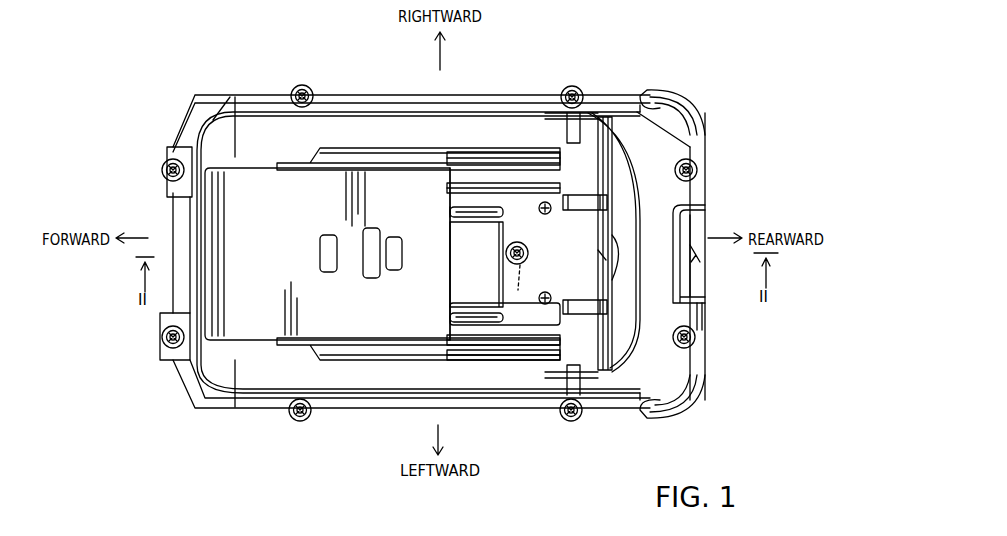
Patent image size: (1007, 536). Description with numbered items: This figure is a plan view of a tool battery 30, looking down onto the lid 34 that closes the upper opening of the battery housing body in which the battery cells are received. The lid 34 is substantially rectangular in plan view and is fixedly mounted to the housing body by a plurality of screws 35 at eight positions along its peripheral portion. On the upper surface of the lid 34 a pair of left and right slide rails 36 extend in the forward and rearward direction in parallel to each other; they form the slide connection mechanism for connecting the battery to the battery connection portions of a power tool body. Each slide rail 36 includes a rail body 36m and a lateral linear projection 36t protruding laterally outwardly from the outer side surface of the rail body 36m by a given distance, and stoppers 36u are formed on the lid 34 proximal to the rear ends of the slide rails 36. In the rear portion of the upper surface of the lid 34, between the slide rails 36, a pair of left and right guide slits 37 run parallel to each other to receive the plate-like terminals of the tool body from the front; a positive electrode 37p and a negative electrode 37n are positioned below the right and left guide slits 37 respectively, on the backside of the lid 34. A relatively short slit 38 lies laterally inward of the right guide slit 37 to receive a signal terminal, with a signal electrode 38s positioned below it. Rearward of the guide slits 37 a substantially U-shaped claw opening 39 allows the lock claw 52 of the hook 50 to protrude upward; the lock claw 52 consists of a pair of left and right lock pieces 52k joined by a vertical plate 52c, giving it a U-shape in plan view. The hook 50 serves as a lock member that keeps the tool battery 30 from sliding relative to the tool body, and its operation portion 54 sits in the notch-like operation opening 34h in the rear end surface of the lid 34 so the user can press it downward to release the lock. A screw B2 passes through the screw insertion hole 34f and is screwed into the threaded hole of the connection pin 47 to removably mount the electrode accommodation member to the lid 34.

The tool battery 30 is at (338, 420).
The lid 34 is at (194, 392).
The screw insertion hole 34f is at (507, 263).
The operation opening 34h is at (703, 213).
The screws 35 is at (161, 168).
The slide rails 36 is at (380, 132).
The rail body 36m is at (338, 176).
The lateral linear projection 36t is at (410, 148).
The stoppers 36u is at (586, 126).
The guide slits 37 is at (488, 151).
The negative electrode 37n is at (565, 362).
The positive electrode 37p is at (511, 195).
The slit 38 is at (467, 222).
The signal electrode 38s is at (448, 213).
The claw opening 39 is at (598, 253).
The connection pin 47 is at (529, 298).
The hook 50 is at (704, 303).
The lock claw 52 is at (608, 212).
The vertical plate 52c is at (610, 272).
The lock pieces 52k is at (545, 115).
The operation portion 54 is at (695, 246).
The screw B2 is at (526, 250).